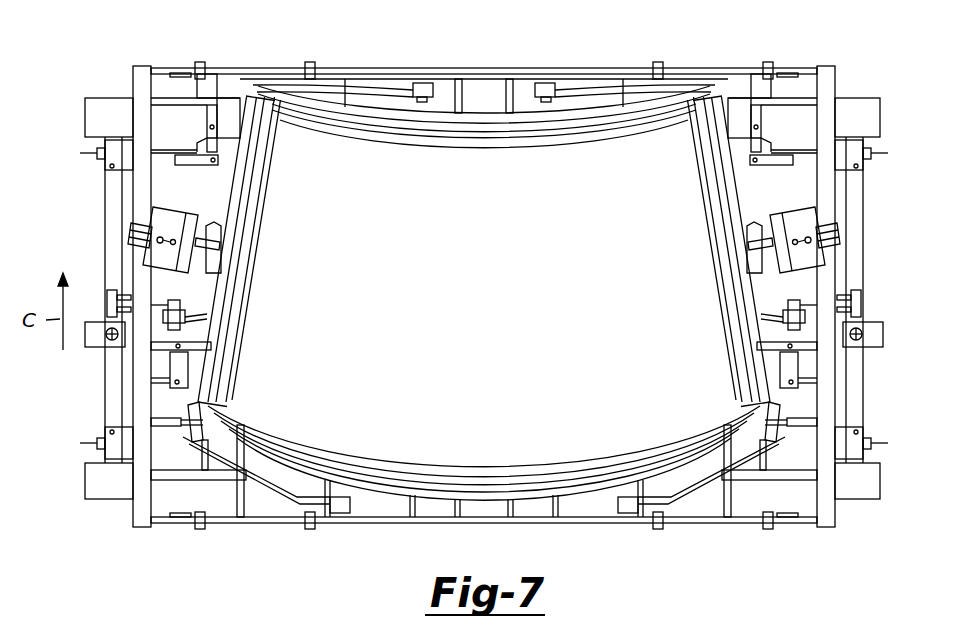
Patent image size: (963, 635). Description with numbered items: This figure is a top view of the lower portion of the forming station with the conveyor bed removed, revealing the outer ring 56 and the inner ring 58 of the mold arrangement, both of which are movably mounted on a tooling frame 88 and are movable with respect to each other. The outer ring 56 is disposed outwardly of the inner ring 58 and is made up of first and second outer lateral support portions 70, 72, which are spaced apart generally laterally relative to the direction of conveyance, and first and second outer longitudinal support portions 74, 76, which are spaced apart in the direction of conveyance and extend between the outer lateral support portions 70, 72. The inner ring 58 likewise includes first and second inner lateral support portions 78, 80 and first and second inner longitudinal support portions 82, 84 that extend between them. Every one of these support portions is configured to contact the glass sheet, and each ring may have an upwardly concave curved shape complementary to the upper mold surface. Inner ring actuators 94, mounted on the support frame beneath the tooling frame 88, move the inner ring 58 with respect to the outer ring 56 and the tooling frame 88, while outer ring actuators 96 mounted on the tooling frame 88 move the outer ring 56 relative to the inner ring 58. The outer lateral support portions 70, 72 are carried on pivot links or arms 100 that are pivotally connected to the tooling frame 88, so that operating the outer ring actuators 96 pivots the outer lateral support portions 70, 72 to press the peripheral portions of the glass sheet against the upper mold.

The outer ring 56 is at (210, 194).
The inner ring 58 is at (264, 262).
The first outer lateral support portion 70 is at (253, 132).
The second outer lateral support portion 72 is at (723, 210).
The first outer longitudinal support portion 74 is at (390, 483).
The second outer longitudinal support portion 76 is at (440, 130).
The first inner lateral support portion 78 is at (258, 221).
The second inner lateral support portion 80 is at (703, 178).
The first inner longitudinal support portion 82 is at (430, 470).
The second inner longitudinal support portion 84 is at (427, 143).
The tooling frame 88 is at (798, 67).
The inner ring actuators 94 is at (97, 350).
The outer ring actuators 96 is at (130, 242).
The pivot links or arms 100 is at (588, 95).